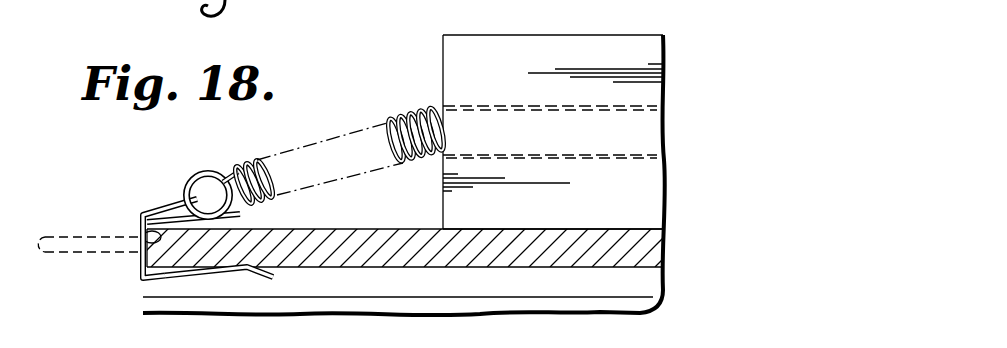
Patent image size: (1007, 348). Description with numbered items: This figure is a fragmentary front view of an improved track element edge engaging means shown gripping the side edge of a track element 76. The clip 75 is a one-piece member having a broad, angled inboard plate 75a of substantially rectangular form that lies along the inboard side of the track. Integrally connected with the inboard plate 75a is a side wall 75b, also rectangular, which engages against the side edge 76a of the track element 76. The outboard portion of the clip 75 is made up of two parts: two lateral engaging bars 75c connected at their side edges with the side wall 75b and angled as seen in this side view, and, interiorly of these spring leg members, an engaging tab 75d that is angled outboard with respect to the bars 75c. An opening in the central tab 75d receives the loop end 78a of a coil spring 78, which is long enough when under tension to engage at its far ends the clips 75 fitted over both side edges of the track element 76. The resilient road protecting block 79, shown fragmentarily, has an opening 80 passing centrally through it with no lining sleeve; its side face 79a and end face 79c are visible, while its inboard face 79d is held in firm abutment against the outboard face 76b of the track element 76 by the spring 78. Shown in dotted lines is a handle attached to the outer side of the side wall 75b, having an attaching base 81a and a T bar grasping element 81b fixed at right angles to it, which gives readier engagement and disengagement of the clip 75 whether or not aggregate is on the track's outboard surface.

The clip 75 is at (194, 251).
The inboard plate 75a is at (259, 284).
The side wall 75b is at (140, 283).
The lateral engaging bars 75c is at (247, 214).
The engaging tab 75d is at (165, 206).
The track element 76 is at (384, 243).
The side edge of track element 76a is at (142, 238).
The outboard face of track element 76b is at (338, 229).
The coil spring 78 is at (317, 152).
The loop end of coil spring 78a is at (204, 171).
The block 79 is at (404, 157).
The side face of block 79a is at (443, 52).
The end face of block 79c is at (518, 47).
The inboard face of block 79d is at (572, 229).
The opening 80 is at (504, 107).
The attaching base 81a is at (72, 254).
The T bar grasping element 81b is at (39, 236).